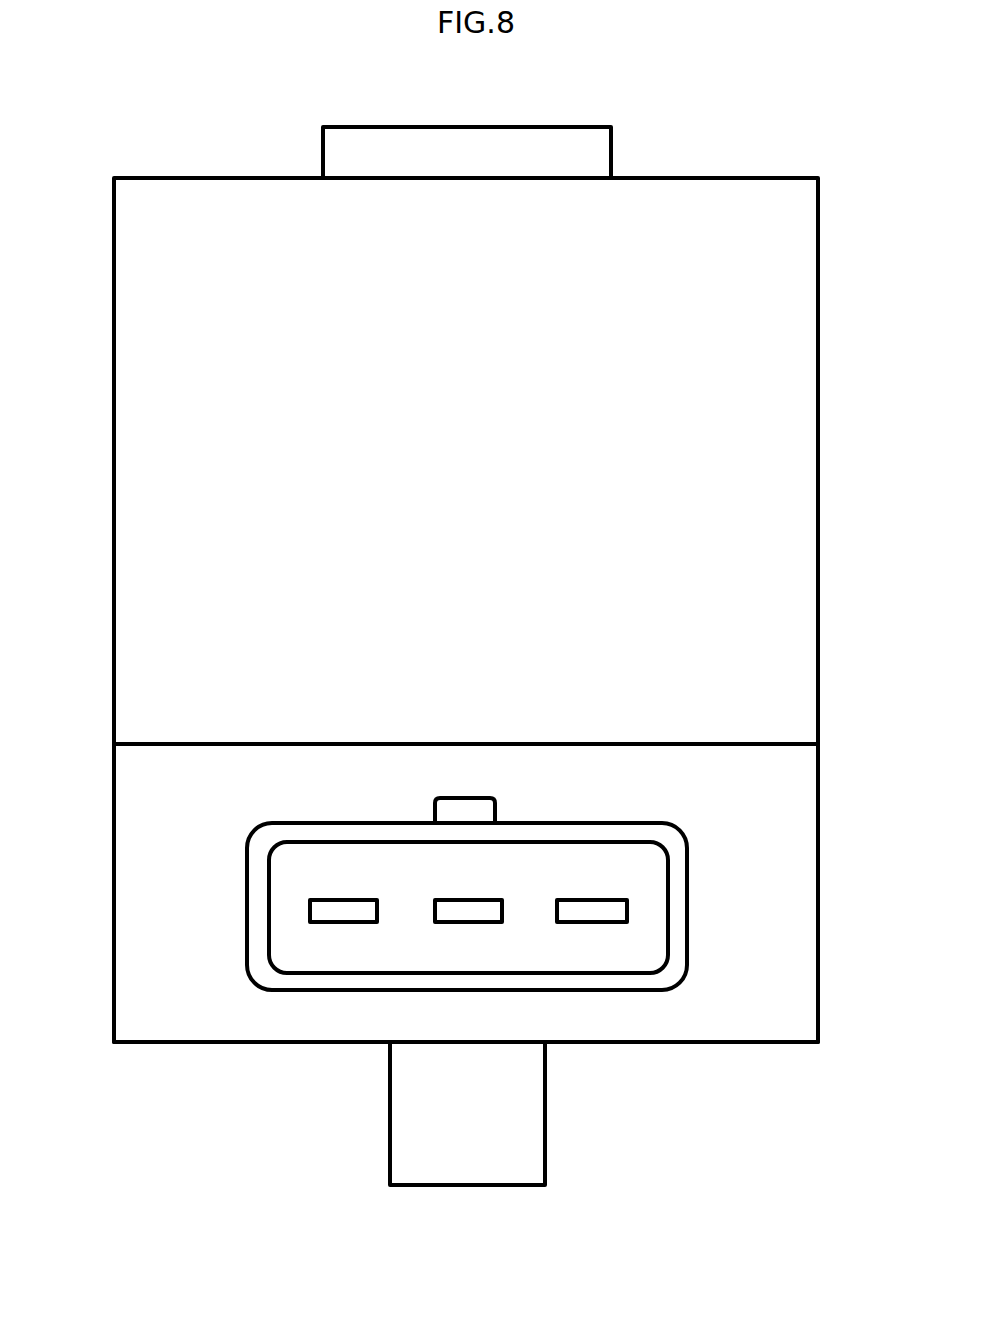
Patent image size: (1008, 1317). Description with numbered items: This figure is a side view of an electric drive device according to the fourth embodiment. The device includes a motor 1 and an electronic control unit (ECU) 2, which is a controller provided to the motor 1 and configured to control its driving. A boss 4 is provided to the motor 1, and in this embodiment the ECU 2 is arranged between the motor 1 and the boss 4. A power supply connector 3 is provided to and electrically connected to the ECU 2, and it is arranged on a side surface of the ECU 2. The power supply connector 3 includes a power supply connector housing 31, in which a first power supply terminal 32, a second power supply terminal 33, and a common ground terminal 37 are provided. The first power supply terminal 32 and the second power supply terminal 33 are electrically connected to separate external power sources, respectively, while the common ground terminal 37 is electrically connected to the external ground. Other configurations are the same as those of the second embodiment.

The motor 1 is at (127, 452).
The electronic control unit (ECU) 2 is at (127, 883).
The power supply connector 3 is at (462, 953).
The boss 4 is at (402, 1113).
The power supply connector housing 31 is at (260, 845).
The first power supply terminal 32 is at (320, 912).
The second power supply terminal 33 is at (620, 912).
The common ground terminal 37 is at (500, 912).